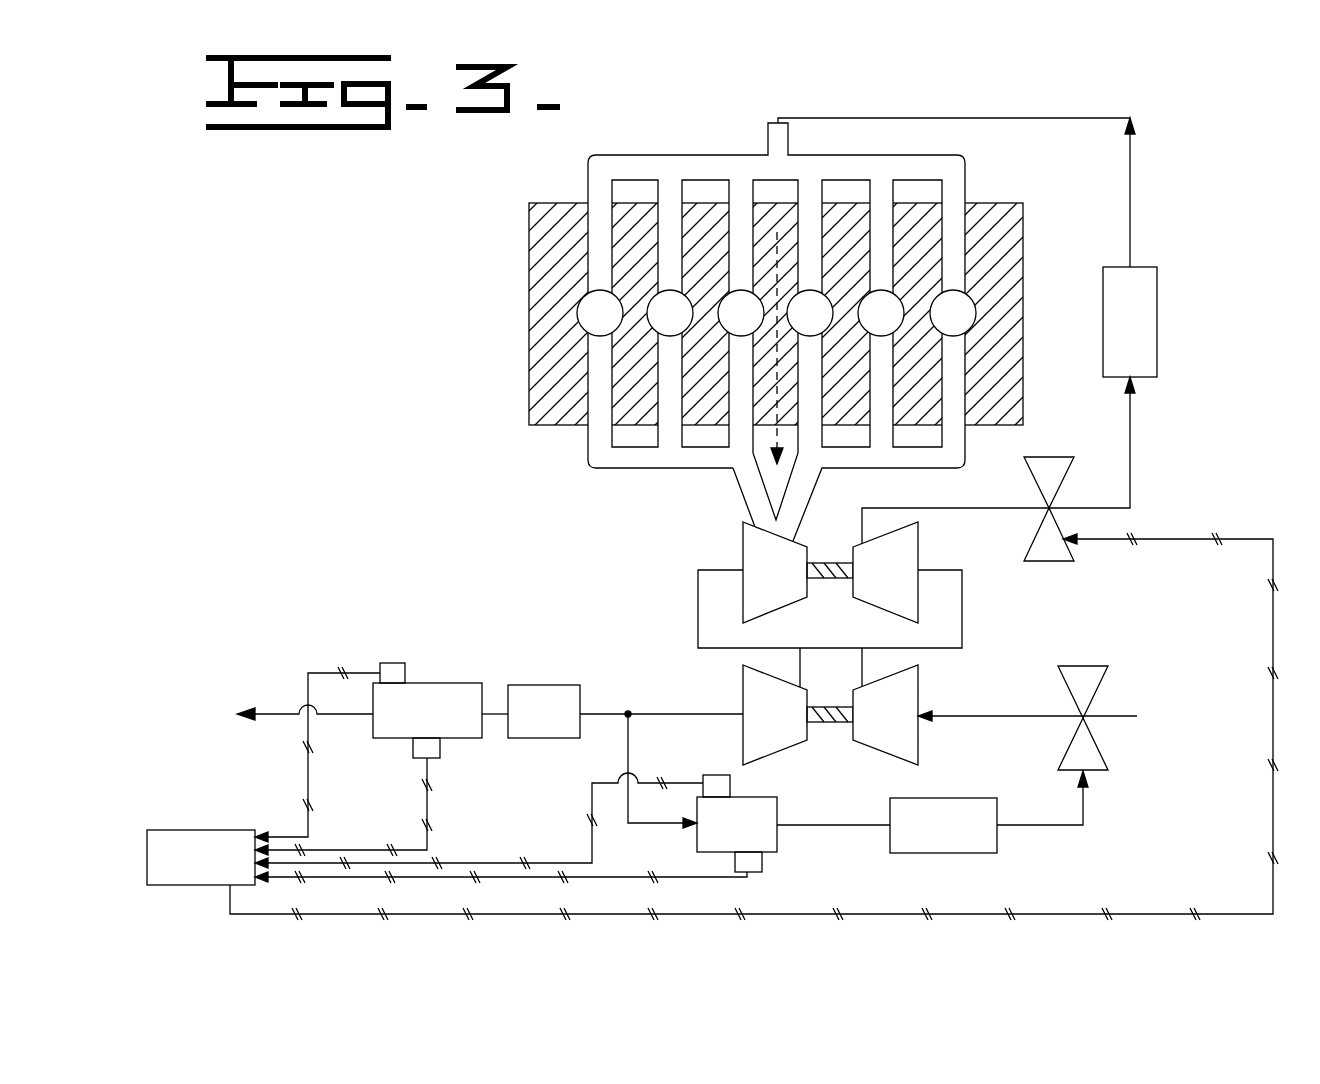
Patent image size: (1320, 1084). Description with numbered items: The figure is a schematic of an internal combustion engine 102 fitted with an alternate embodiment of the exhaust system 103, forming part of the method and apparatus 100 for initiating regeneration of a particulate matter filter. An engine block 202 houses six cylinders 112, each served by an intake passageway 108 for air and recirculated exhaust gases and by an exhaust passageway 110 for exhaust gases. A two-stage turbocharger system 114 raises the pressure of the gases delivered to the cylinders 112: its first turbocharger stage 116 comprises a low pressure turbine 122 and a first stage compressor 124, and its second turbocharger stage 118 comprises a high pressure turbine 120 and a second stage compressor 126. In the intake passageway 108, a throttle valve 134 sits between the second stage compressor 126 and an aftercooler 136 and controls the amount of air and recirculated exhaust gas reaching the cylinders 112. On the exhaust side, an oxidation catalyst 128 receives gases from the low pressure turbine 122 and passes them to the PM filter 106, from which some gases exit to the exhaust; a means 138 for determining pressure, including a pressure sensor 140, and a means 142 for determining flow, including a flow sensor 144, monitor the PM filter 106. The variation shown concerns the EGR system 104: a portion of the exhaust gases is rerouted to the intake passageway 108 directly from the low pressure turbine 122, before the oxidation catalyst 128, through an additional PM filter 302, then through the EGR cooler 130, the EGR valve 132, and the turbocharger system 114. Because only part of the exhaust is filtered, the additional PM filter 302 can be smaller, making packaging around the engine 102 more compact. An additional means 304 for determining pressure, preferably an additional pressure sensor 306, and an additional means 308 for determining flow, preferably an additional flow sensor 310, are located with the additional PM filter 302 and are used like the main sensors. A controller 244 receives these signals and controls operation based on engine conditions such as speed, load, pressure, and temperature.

The method and apparatus 100 is at (293, 281).
The internal combustion engine 102 is at (456, 229).
The exhaust system 103 is at (365, 588).
The exhaust gas recirculation (EGR) system 104 is at (333, 597).
The particulate matter (PM) filter 106 is at (458, 683).
The intake passageway 108 is at (707, 155).
The exhaust passageway 110 is at (586, 443).
The cylinder 112 is at (578, 308).
The two-stage turbocharger system 114 is at (607, 562).
The first turbocharger stage 116 is at (833, 730).
The second turbocharger stage 118 is at (825, 597).
The high pressure turbine 120 is at (743, 555).
The low pressure turbine 122 is at (742, 700).
The first stage compressor 124 is at (920, 698).
The second stage compressor 126 is at (923, 558).
The oxidation catalyst 128 is at (555, 685).
The EGR cooler 130 is at (997, 845).
The EGR valve 132 is at (1084, 668).
The throttle valve 134 is at (1052, 563).
The aftercooler 136 is at (1157, 309).
The means for determining pressure 138 is at (367, 665).
The pressure sensor 140 is at (397, 663).
The means for determining flow of exhaust gases 142 is at (403, 748).
The flow sensor 144 is at (440, 747).
The engine block 202 is at (530, 371).
The controller 244 is at (180, 868).
The additional PM filter 302 is at (697, 835).
The additional means for determining pressure 304 is at (695, 773).
The additional pressure sensor 306 is at (730, 790).
The additional means for determining flow of exhaust gases 308 is at (787, 835).
The additional flow sensor 310 is at (762, 858).